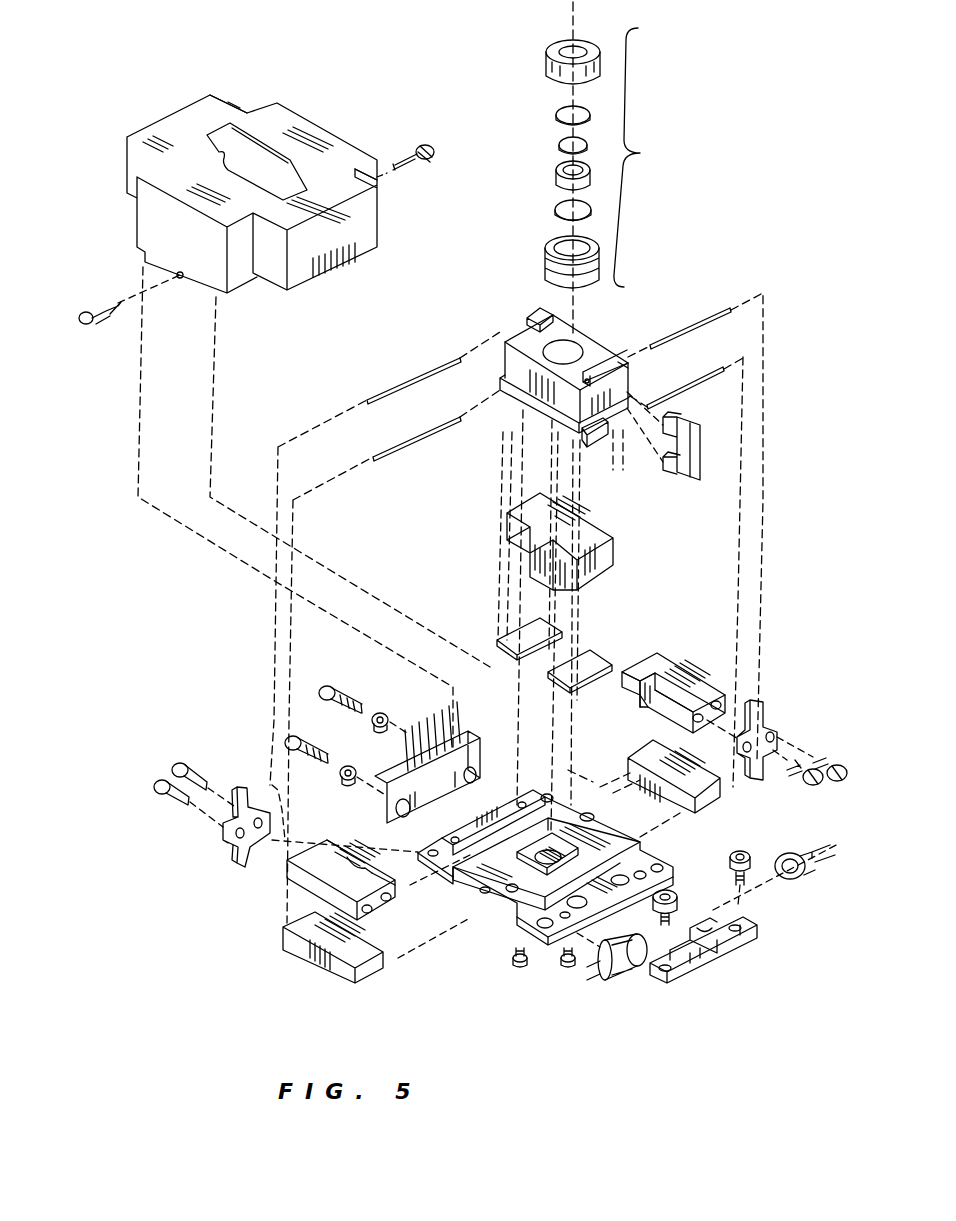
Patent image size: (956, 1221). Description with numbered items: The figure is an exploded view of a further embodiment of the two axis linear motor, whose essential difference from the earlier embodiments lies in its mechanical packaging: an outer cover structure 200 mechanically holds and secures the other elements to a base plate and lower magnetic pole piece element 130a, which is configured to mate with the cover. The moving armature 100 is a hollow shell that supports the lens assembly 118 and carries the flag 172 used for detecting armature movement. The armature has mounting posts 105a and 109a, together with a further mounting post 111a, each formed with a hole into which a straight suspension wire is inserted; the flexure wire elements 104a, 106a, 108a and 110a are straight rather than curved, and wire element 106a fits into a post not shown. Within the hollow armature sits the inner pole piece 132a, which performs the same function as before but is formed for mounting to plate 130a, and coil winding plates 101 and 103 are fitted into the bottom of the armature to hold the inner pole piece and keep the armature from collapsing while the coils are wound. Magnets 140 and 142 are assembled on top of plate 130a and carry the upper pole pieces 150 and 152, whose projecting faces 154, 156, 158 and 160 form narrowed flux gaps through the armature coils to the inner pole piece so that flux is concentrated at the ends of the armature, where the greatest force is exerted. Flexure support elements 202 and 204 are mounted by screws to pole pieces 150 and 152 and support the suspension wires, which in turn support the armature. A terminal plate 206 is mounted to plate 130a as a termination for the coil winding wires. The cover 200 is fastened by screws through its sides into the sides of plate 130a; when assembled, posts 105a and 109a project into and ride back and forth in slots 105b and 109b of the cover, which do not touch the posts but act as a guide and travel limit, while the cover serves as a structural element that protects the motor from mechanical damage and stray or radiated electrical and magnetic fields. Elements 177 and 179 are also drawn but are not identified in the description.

The outer cover structure 200 is at (302, 120).
The slot in cover 105b is at (186, 118).
The slot in cover 109b is at (297, 205).
The lens assembly 118 is at (618, 168).
The armature 100 is at (600, 318).
The mounting post 105a is at (535, 320).
The mounting post 109a is at (620, 358).
The wire element 108a is at (728, 306).
The wire element 110a is at (697, 380).
The wire element 104a is at (422, 370).
The wire element 106a is at (403, 445).
The flag 172 is at (700, 459).
The mounting post 111a is at (590, 445).
The inner pole piece 132a is at (607, 552).
The coil winding plate 101 is at (490, 644).
The coil winding plate 103 is at (590, 662).
The upper pole piece 152 is at (680, 669).
The face of upper pole piece 158 is at (622, 696).
The face of upper pole piece 160 is at (682, 723).
The magnet 142 is at (635, 750).
The flexure support element 204 is at (770, 725).
The terminal plate 206 is at (470, 762).
The flexure support element 202 is at (230, 835).
The face of upper pole piece 154 is at (337, 844).
The face of upper pole piece 156 is at (390, 872).
The upper pole piece 150 is at (297, 872).
The magnet 140 is at (320, 968).
The base plate and lower magnetic pole piece element 130a is at (658, 853).
The cylindrical connector 179 is at (613, 987).
The ring connector 177 is at (797, 885).